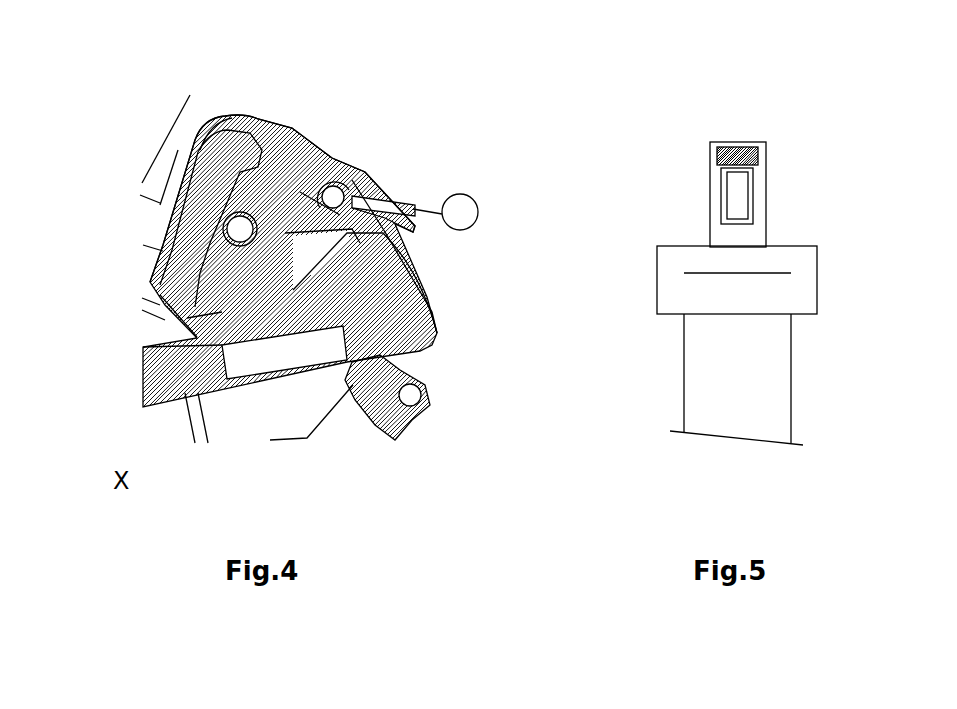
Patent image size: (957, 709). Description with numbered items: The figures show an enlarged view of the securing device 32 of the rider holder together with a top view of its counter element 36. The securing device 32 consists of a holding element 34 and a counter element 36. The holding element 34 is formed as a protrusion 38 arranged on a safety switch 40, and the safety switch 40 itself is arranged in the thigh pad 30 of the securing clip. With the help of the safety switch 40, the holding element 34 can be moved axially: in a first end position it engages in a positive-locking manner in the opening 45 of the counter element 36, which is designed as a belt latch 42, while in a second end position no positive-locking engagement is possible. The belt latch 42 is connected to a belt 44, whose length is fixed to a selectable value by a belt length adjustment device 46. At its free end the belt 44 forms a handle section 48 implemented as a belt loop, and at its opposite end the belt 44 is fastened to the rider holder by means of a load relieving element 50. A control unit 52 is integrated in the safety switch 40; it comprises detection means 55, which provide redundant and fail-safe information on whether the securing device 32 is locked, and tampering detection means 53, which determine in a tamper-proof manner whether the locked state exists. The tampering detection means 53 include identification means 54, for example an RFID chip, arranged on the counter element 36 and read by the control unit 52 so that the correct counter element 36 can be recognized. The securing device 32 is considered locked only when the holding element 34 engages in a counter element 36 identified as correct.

In FIG. 4, the thigh pad 30 is at (172, 220).
In FIG. 4, the securing device 32 is at (303, 186).
In FIG. 4, the holding element 34 is at (245, 77).
In FIG. 4, the counter element 36 is at (282, 165).
In FIG. 5, the counter element 36 is at (797, 194).
In FIG. 4, the protrusion 38 is at (240, 117).
In FIG. 4, the safety switch 40 is at (147, 201).
In FIG. 4, the belt latch 42 is at (225, 118).
In FIG. 5, the belt latch 42 is at (767, 184).
In FIG. 4, the belt 44 is at (358, 185).
In FIG. 5, the belt 44 is at (747, 400).
In FIG. 5, the opening 45 is at (733, 198).
In FIG. 4, the belt length adjustment device 46 is at (302, 135).
In FIG. 4, the handle section 48 is at (474, 196).
In FIG. 4, the load relieving element 50 is at (425, 400).
In FIG. 4, the control unit 52 is at (186, 150).
In FIG. 4, the tampering detection means 53 is at (122, 147).
In FIG. 5, the tampering detection means 53 is at (754, 125).
In FIG. 5, the identification means 54 is at (740, 142).
In FIG. 4, the detection means 55 is at (188, 130).